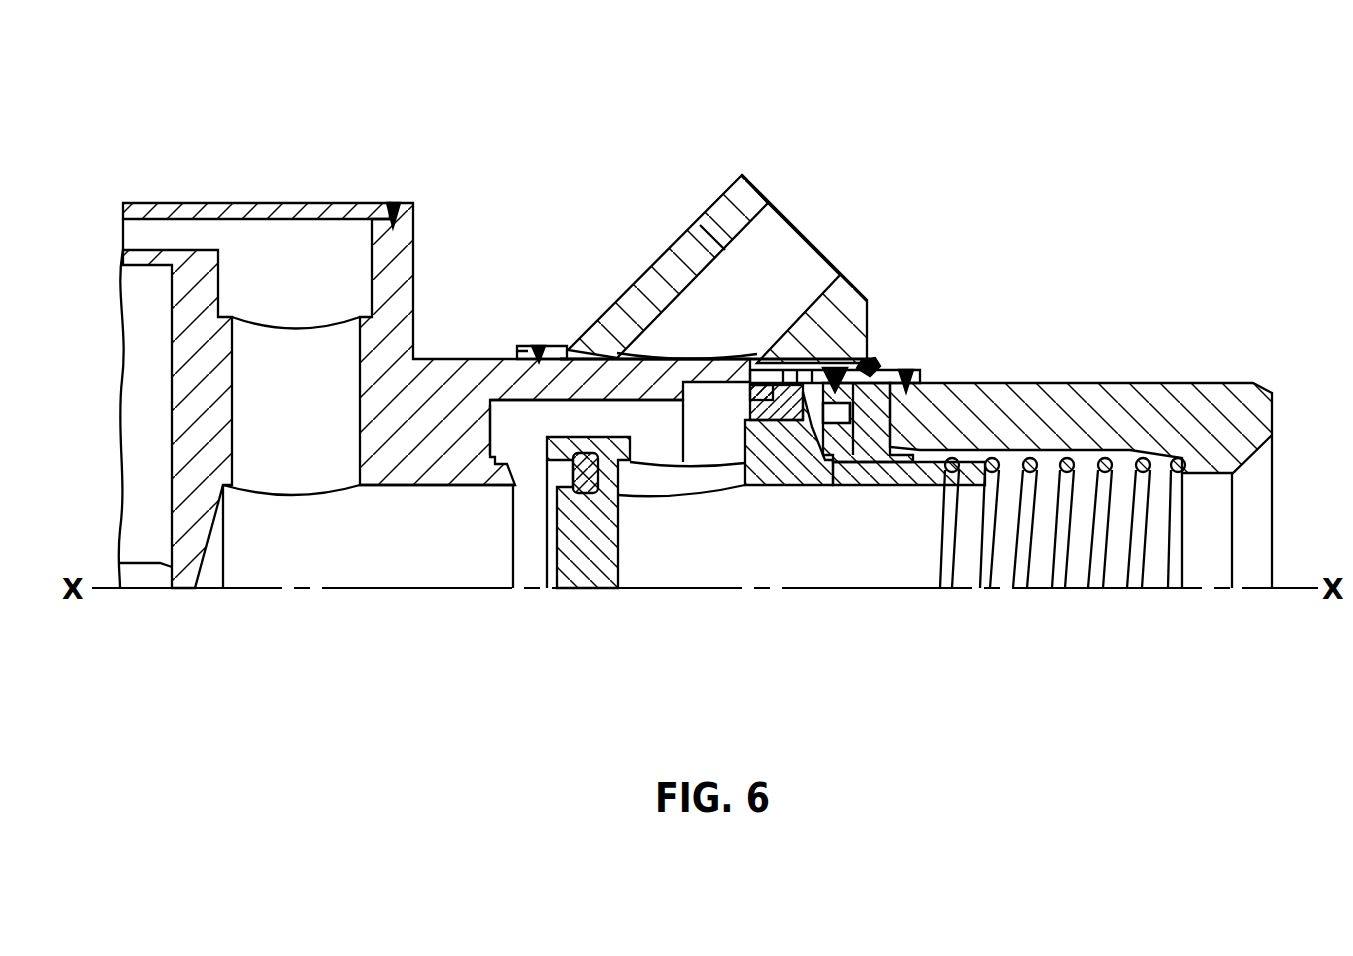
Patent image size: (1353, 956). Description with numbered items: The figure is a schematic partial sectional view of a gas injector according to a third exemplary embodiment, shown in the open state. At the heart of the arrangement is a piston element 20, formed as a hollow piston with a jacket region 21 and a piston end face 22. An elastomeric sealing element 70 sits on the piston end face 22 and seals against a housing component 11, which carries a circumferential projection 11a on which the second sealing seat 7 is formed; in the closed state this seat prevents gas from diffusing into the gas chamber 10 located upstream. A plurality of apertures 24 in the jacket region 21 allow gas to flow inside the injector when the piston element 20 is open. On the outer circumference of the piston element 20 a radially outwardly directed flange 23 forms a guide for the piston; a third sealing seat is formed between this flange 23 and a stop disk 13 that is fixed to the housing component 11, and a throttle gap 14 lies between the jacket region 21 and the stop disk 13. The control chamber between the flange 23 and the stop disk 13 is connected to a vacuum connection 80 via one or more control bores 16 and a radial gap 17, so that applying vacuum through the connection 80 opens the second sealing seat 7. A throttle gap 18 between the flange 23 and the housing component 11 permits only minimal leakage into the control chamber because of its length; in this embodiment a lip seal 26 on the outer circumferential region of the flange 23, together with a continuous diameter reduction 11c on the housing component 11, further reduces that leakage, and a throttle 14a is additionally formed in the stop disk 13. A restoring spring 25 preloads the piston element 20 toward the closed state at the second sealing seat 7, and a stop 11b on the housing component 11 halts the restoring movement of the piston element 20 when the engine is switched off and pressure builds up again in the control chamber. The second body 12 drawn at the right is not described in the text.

The second sealing seat 7 is at (493, 476).
The gas chamber 10 is at (258, 245).
The housing component 11 is at (440, 403).
The circumferential projection 11a is at (495, 460).
The stop 11b is at (668, 378).
The continuous diameter reduction 11c is at (713, 358).
The second body 12 is at (1177, 413).
The stop disk 13 is at (852, 414).
The throttle gap 14 is at (833, 473).
The throttle 14a is at (856, 416).
The control bore 16 is at (835, 370).
The radial gap 17 is at (868, 360).
The throttle gap 18 is at (757, 358).
The piston element 20 is at (563, 400).
The jacket region 21 is at (893, 477).
The piston end face 22 is at (603, 565).
The radially outwardly directed flange 23 is at (768, 483).
The aperture 24 is at (687, 478).
The restoring spring 25 is at (1065, 460).
The lip seal 26 is at (782, 392).
The elastomeric sealing element 70 is at (590, 478).
The vacuum connection 80 is at (745, 200).